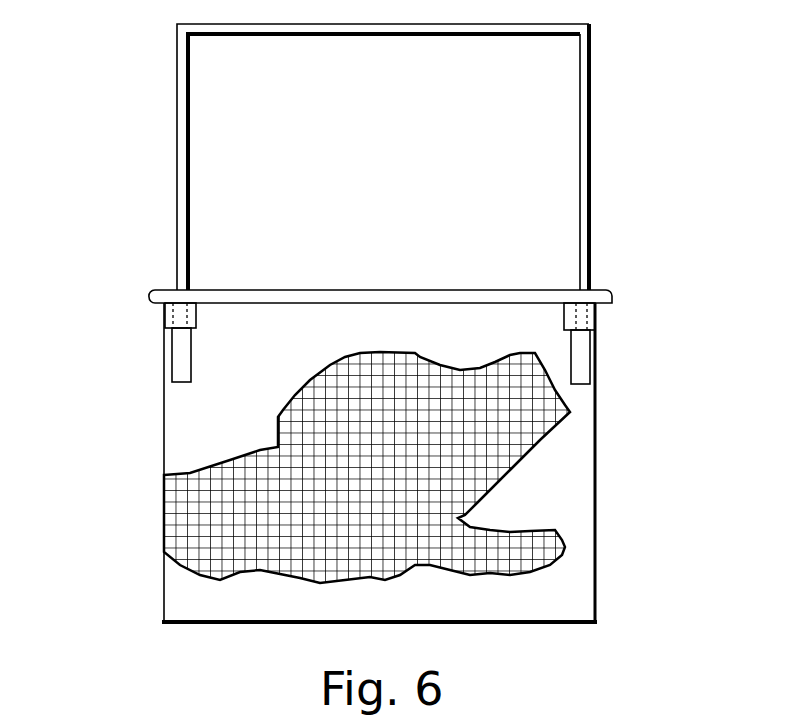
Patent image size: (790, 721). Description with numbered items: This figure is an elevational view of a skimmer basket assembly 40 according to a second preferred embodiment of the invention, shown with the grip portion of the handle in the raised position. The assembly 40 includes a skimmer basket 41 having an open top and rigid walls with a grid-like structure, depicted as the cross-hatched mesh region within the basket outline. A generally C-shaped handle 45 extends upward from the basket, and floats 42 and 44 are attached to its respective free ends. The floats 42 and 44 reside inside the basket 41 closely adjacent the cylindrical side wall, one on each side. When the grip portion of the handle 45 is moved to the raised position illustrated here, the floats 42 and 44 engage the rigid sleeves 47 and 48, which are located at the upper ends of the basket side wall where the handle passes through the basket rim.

The skimmer basket assembly 40 is at (147, 509).
The skimmer basket 41 is at (577, 451).
The float 42 is at (180, 363).
The float 44 is at (580, 366).
The handle 45 is at (640, 171).
The rigid sleeve 47 is at (167, 317).
The rigid sleeve 48 is at (590, 317).